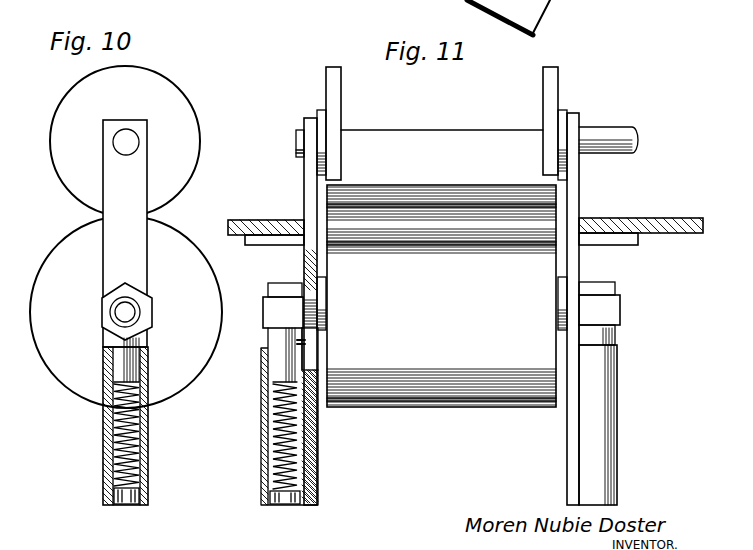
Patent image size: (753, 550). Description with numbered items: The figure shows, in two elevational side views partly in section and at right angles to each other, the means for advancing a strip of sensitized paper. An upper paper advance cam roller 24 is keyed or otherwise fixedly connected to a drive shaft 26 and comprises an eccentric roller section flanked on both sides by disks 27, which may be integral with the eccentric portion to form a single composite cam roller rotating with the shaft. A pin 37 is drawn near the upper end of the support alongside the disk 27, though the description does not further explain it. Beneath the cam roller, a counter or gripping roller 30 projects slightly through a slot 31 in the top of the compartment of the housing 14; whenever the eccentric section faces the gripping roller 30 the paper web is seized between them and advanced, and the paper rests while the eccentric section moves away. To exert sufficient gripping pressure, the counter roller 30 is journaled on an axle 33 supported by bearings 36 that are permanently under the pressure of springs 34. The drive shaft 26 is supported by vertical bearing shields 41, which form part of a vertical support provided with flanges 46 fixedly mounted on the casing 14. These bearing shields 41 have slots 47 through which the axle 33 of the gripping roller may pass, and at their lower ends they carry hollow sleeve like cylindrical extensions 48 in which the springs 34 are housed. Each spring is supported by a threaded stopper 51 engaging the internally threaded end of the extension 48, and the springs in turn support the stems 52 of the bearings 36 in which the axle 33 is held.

In FIG. 11, the housing 14 is at (668, 214).
In FIG. 11, the upper paper advance cam roller 24 is at (565, 72).
In FIG. 11, the drive shaft 26 is at (594, 127).
In FIG. 10, the disks 27 is at (190, 168).
In FIG. 11, the disks 27 is at (338, 99).
In FIG. 10, the counter or gripping roller 30 is at (40, 336).
In FIG. 11, the counter or gripping roller 30 is at (378, 407).
In FIG. 11, the slot 31 is at (586, 222).
In FIG. 11, the axle 33 is at (562, 303).
In FIG. 10, the springs 34 is at (138, 455).
In FIG. 11, the springs 34 is at (266, 460).
In FIG. 11, the bearings 36 is at (280, 282).
In FIG. 10, the pin 37 is at (136, 138).
In FIG. 11, the pin 37 is at (298, 130).
In FIG. 10, the bearing shields 41 is at (140, 160).
In FIG. 11, the bearing shields 41 is at (310, 120).
In FIG. 11, the flanges 46 is at (250, 243).
In FIG. 11, the slots 47 is at (315, 355).
In FIG. 10, the sleeve like cylindrical extensions 48 is at (108, 476).
In FIG. 11, the sleeve like cylindrical extensions 48 is at (266, 506).
In FIG. 11, the threaded stopper 51 is at (289, 506).
In FIG. 10, the stems 52 is at (134, 355).
In FIG. 11, the stems 52 is at (280, 370).